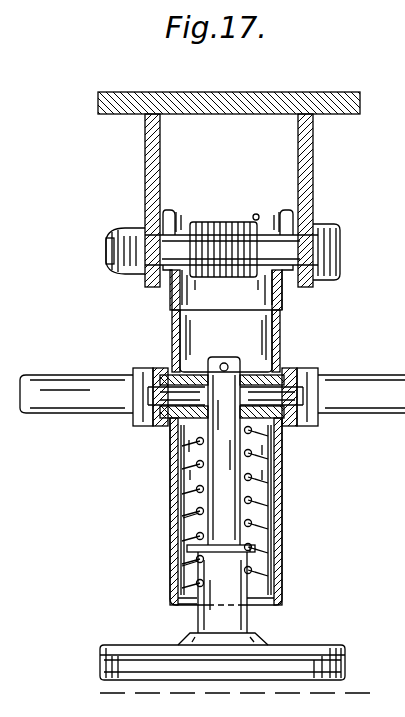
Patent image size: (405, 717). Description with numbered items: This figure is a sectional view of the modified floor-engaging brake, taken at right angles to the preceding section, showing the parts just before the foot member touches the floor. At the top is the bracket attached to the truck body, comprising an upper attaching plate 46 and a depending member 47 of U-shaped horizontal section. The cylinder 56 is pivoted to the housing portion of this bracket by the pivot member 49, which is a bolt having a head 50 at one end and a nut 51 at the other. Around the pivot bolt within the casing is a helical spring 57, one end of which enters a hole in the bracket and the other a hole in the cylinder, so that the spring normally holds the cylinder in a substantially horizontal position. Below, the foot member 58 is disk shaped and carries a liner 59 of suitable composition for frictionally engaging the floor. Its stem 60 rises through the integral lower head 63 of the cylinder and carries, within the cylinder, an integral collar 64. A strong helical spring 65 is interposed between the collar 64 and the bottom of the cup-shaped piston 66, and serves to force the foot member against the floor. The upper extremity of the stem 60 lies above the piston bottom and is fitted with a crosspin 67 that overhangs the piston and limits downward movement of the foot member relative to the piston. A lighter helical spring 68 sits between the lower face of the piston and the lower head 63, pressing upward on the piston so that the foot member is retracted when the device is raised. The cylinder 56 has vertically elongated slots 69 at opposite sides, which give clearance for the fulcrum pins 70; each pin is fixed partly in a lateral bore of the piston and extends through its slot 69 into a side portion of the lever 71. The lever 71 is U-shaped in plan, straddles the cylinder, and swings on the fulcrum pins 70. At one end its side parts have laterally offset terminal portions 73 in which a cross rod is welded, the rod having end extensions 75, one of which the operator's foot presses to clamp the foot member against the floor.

The upper attaching plate 46 is at (236, 104).
The depending member 47 is at (147, 152).
The pivot member 49 is at (271, 248).
The head 50 is at (328, 245).
The nut 51 is at (120, 268).
The cylinder 56 is at (279, 522).
The helical spring 57 is at (214, 252).
The foot member 58 is at (326, 650).
The liner 59 is at (346, 666).
The stem 60 is at (215, 616).
The lower head 63 is at (262, 608).
The collar 64 is at (257, 549).
The helical spring 65 is at (195, 512).
The piston 66 is at (262, 326).
The crosspin 67 is at (224, 363).
The helical spring 68 is at (186, 560).
The slots 69 is at (169, 453).
The fulcrum pins 70 is at (152, 403).
The lever 71 is at (160, 370).
The terminal portions 73 is at (138, 368).
The end extensions 75 is at (66, 390).